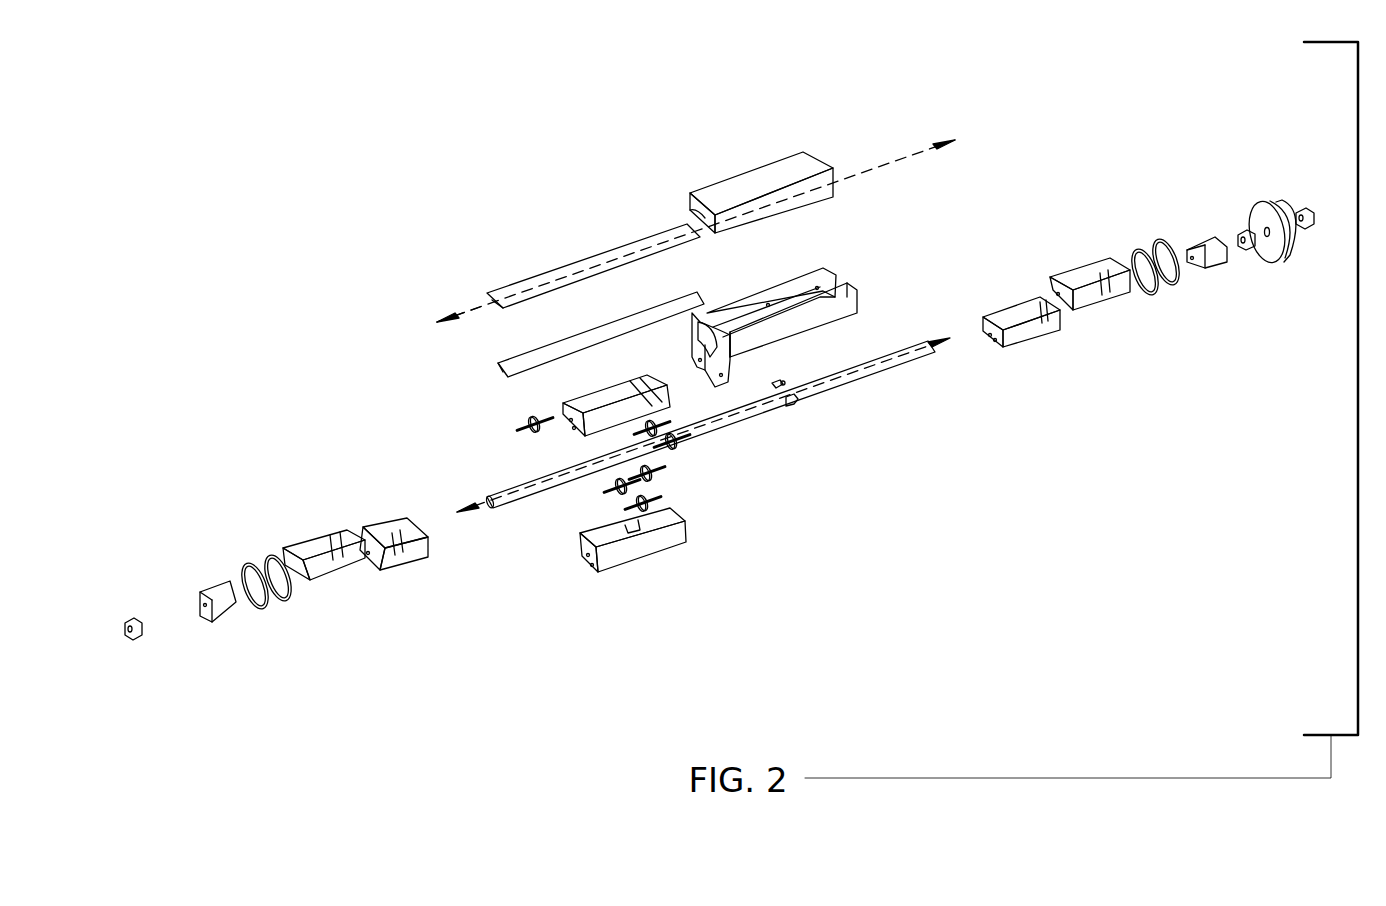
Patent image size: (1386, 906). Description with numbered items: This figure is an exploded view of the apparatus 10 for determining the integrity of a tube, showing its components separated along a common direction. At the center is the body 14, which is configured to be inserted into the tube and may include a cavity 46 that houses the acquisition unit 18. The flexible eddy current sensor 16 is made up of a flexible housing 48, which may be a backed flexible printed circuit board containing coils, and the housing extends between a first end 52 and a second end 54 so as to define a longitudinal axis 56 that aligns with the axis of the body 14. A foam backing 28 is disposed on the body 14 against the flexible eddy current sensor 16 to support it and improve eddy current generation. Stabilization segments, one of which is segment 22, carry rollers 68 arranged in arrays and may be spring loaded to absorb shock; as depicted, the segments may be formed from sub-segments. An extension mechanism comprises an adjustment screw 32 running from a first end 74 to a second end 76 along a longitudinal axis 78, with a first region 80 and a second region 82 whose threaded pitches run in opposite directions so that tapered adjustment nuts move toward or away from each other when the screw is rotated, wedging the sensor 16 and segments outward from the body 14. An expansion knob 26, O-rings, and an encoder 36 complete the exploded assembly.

The apparatus 10 is at (305, 222).
The body 14 is at (785, 301).
The flexible eddy current sensor 16 is at (539, 250).
The acquisition unit 18 is at (750, 184).
The stabilization segment 22 is at (1085, 266).
The expansion knob 26 is at (1270, 205).
The foam backing 28 is at (590, 330).
The adjustment screw 32 is at (868, 378).
The encoder 36 is at (785, 382).
The cavity 46 is at (742, 303).
The flexible housing 48 is at (608, 248).
The first end 52 is at (483, 279).
The second end 54 is at (640, 214).
The longitudinal axis 56 is at (480, 322).
The roller 68 is at (532, 421).
The first end 74 is at (470, 486).
The second end 76 is at (928, 322).
The longitudinal axis 78 is at (480, 515).
The first region 80 is at (677, 462).
The second region 82 is at (800, 424).